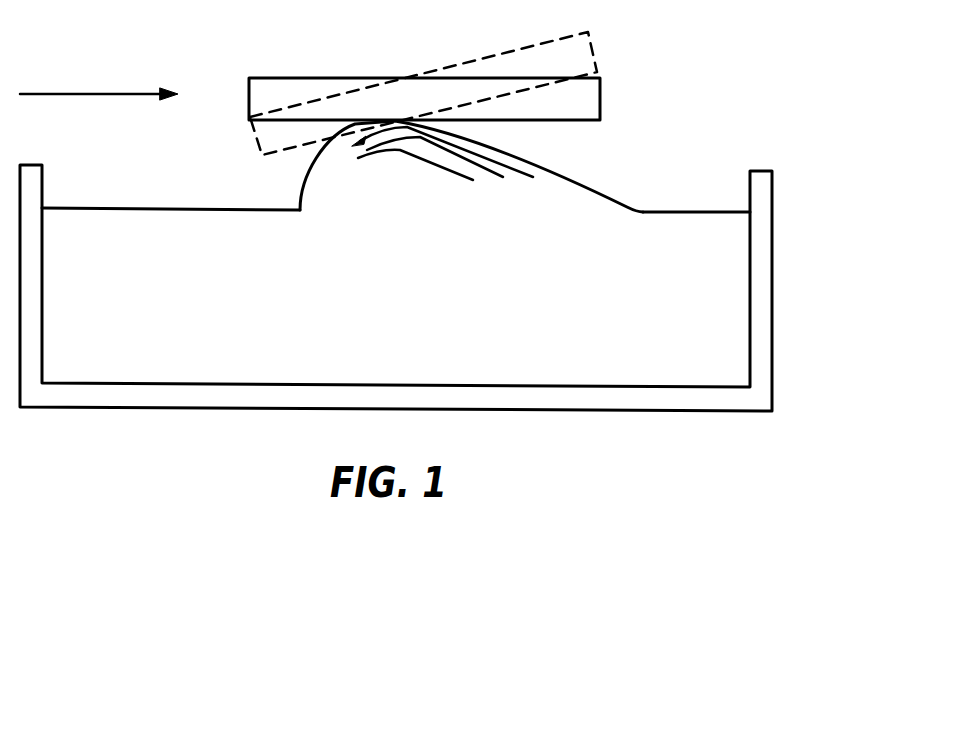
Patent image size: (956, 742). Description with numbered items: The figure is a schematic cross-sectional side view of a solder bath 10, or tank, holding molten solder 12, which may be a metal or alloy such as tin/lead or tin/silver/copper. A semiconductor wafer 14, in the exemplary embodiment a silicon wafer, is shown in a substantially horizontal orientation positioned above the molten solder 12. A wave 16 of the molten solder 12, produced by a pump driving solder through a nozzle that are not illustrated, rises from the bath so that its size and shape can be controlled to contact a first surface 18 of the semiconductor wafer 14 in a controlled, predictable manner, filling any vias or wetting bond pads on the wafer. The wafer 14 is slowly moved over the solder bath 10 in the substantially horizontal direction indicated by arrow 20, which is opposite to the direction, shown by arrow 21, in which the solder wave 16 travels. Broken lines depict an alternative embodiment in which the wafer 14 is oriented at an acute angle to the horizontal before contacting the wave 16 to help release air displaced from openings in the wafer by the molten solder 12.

The solder bath 10 is at (760, 259).
The molten solder 12 is at (170, 313).
The semiconductor wafer 14 is at (558, 53).
The solder wave 16 is at (302, 163).
The first surface 18 is at (552, 123).
The arrow 20 is at (87, 93).
The arrow 21 is at (417, 145).